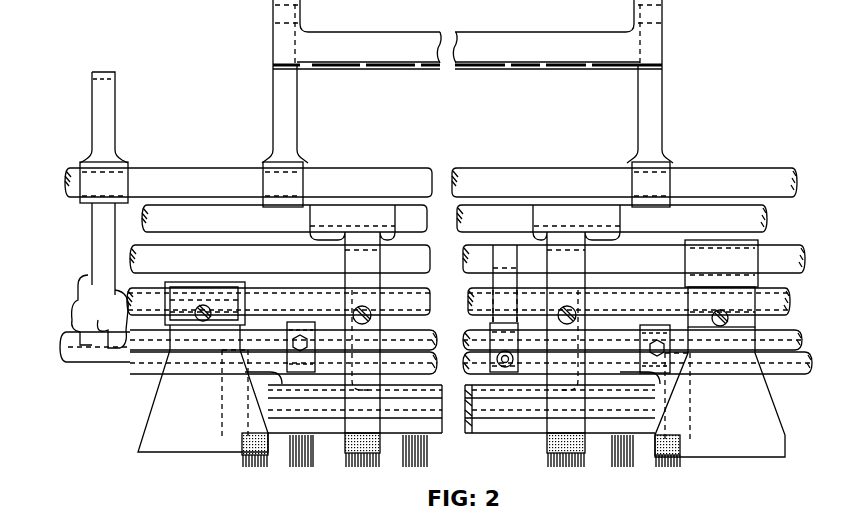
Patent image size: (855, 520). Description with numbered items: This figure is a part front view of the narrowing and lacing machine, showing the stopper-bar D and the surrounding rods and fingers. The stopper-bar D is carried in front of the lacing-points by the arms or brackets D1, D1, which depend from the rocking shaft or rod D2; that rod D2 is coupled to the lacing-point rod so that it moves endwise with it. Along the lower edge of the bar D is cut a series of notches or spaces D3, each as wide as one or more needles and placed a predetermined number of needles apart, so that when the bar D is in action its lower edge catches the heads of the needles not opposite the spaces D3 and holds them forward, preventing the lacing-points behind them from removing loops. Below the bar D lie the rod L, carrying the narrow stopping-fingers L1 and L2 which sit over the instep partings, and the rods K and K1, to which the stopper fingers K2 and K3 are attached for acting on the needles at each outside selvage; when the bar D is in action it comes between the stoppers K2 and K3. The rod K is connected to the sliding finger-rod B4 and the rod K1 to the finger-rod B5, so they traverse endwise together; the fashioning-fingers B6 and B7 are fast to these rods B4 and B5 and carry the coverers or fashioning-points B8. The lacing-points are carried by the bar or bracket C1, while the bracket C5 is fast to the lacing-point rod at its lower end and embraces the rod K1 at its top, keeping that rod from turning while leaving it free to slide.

The stopper-bar D is at (468, 31).
The arms or brackets D1 is at (467, 103).
The rocking shaft or rod D2 is at (431, 182).
The notches or spaces D3 is at (505, 67).
The rod L is at (454, 218).
The narrow stopping-finger L1 is at (352, 336).
The narrow stopping-finger L2 is at (576, 336).
The rod K is at (458, 301).
The rod K1 is at (467, 259).
The stopper finger or bracket K2 is at (203, 367).
The stopper finger K3 is at (720, 348).
The sliding rod B4 is at (471, 364).
The sliding rod B5 is at (466, 334).
The fashioning-finger B6 is at (238, 420).
The fashioning-finger B7 is at (686, 420).
The coverers or fashioning-points B8 is at (255, 458).
The bar or bracket C1 is at (495, 373).
The bracket C5 is at (505, 283).